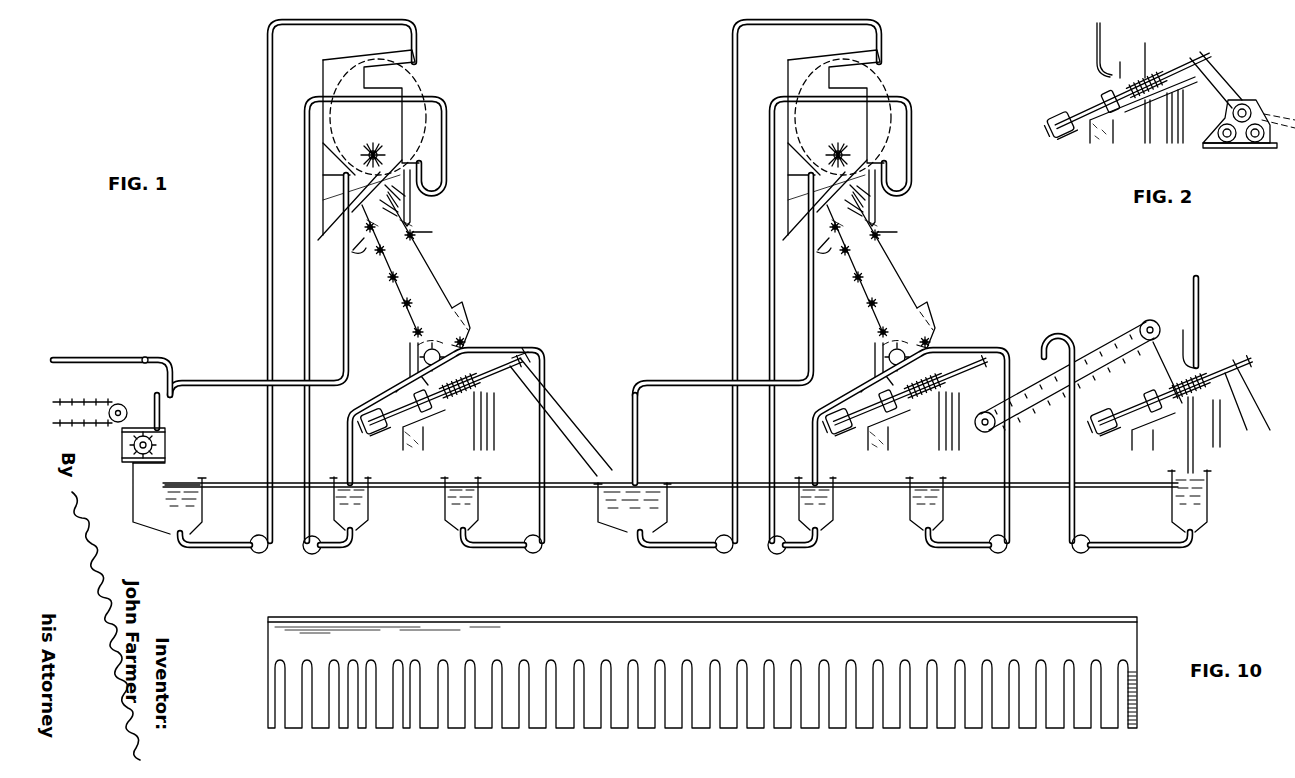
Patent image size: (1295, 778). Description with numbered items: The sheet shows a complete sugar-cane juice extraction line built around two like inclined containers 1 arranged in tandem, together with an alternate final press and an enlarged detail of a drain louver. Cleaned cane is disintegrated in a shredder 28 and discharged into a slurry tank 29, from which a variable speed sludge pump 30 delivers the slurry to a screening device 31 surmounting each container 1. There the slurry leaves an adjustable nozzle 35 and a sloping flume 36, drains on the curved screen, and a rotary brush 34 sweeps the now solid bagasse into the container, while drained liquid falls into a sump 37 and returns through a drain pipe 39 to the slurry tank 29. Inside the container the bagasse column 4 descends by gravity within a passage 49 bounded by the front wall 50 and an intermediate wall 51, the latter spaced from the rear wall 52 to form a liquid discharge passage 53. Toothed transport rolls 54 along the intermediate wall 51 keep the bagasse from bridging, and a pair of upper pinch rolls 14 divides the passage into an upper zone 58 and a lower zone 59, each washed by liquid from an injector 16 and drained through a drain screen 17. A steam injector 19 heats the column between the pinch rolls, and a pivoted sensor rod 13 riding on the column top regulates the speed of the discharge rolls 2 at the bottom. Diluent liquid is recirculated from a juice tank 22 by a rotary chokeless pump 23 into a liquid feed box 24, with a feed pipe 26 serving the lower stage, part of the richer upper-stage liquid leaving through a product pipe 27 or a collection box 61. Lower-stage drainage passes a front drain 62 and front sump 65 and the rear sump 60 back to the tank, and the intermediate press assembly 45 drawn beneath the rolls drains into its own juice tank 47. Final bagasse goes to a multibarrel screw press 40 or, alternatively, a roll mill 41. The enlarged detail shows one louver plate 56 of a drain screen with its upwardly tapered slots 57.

In FIG. 1, the container 1 is at (441, 279).
In FIG. 1, the discharge rolls 2 is at (433, 358).
In FIG. 1, the bagasse column 4 is at (407, 264).
In FIG. 1, the sensor rod 13 is at (392, 192).
In FIG. 1, the upper pinch rolls 14 is at (388, 250).
In FIG. 1, the injector 16 is at (405, 168).
In FIG. 1, the drain screen 17 is at (394, 305).
In FIG. 1, the steam injector 19 is at (420, 244).
In FIG. 1, the juice tank 22 is at (370, 507).
In FIG. 1, the rotary chokeless pump 23 is at (312, 554).
In FIG. 1, the liquid feed box 24 is at (424, 178).
In FIG. 1, the feed pipe 26 is at (411, 213).
In FIG. 1, the product pipe 27 is at (112, 358).
In FIG. 1, the shredder 28 is at (170, 445).
In FIG. 1, the slurry tank 29 is at (205, 507).
In FIG. 1, the sludge pump 30 is at (259, 553).
In FIG. 1, the screening device 31 is at (336, 121).
In FIG. 1, the rotary brush 34 is at (373, 143).
In FIG. 1, the nozzle 35 is at (405, 58).
In FIG. 1, the flume 36 is at (398, 70).
In FIG. 1, the sump 37 is at (323, 190).
In FIG. 1, the drain pipe 39 is at (346, 250).
In FIG. 1, the multibarrel screw press 40 is at (1198, 366).
In FIG. 2, the roll mill 41 is at (1257, 102).
In FIG. 1, the ram cylinder 45 is at (490, 374).
In FIG. 1, the juice tank 47 is at (480, 507).
In FIG. 1, the passage 49 is at (430, 266).
In FIG. 1, the front wall 50 is at (442, 293).
In FIG. 1, the intermediate wall 51 is at (398, 276).
In FIG. 1, the rear wall 52 is at (404, 313).
In FIG. 1, the liquid discharge passage 53 is at (388, 274).
In FIG. 1, the transport rolls 54 is at (424, 331).
In FIG. 10, the louver plates 56 is at (1140, 640).
In FIG. 10, the slots 57 is at (690, 732).
In FIG. 1, the upper zone 58 is at (380, 225).
In FIG. 1, the lower zone 59 is at (418, 283).
In FIG. 1, the rear sump 60 is at (410, 361).
In FIG. 1, the collection box 61 is at (357, 255).
In FIG. 1, the front drain 62 is at (462, 311).
In FIG. 1, the front sump 65 is at (467, 322).